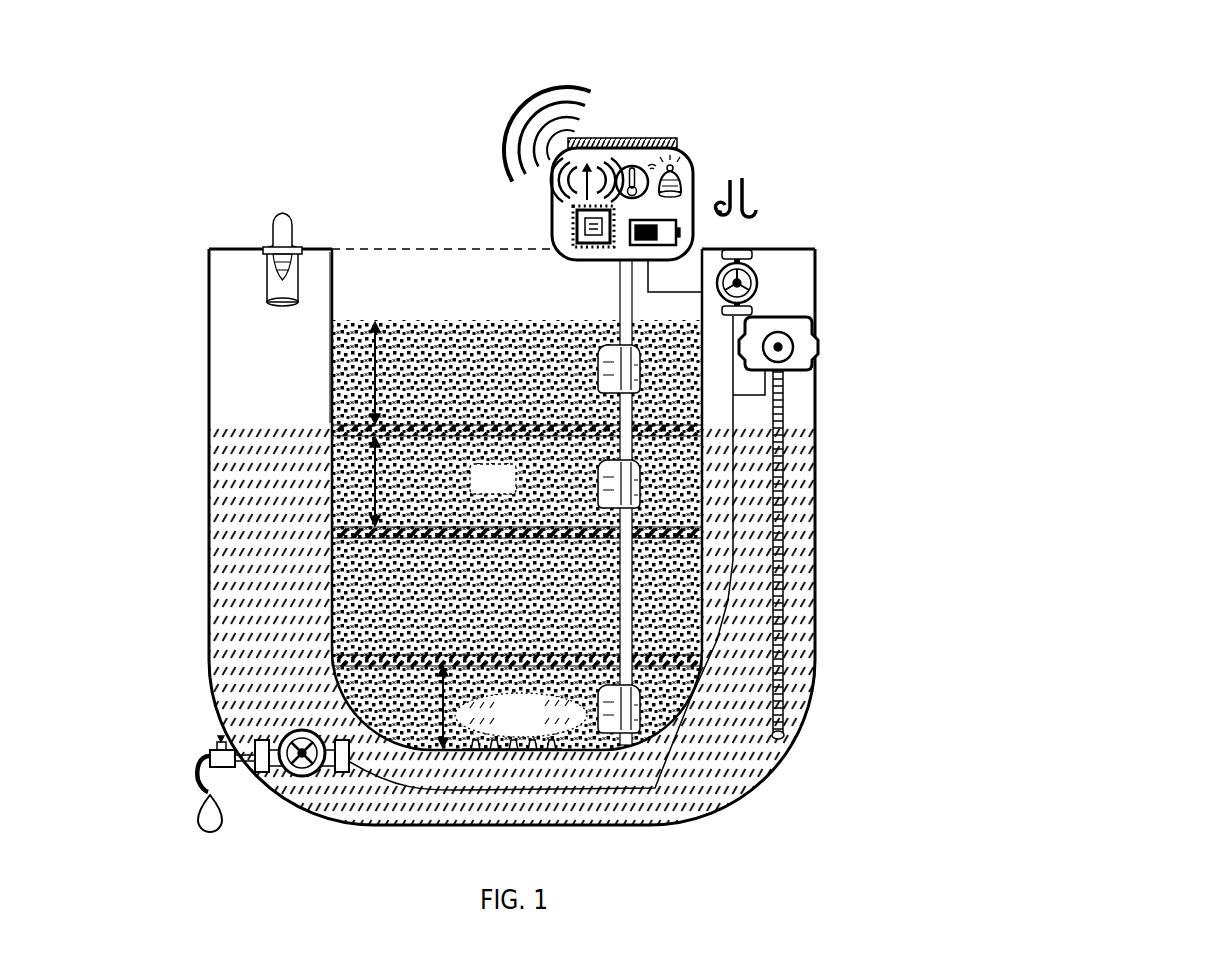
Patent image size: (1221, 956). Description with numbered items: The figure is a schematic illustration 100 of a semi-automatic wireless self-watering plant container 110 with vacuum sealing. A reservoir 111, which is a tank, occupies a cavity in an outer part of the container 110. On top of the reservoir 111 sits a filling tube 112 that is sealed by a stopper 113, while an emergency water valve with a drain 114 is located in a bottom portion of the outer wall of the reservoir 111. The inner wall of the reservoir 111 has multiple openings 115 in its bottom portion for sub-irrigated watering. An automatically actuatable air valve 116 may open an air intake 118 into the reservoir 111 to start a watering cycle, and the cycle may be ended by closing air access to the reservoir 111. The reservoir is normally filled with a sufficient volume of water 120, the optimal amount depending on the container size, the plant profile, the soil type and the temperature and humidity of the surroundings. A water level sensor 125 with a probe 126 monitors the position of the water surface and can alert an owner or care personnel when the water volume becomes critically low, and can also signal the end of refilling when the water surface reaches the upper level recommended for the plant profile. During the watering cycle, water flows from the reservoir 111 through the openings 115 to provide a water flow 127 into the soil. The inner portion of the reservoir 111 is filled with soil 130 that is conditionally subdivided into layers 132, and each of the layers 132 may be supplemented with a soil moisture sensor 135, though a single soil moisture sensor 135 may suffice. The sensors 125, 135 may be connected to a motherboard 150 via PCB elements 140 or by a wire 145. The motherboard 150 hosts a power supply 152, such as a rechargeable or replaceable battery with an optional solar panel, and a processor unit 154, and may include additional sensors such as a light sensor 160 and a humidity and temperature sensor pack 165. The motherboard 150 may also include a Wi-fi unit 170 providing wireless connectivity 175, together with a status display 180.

The schematic illustration 100 is at (1197, 103).
The self-watering plant container 110 is at (209, 342).
The reservoir 111 is at (277, 405).
The filling tube 112 is at (267, 278).
The stopper 113 is at (272, 230).
The emergency water valve with drain 114 is at (212, 756).
The openings 115 is at (497, 752).
The air valve 116 is at (757, 290).
The air intake 118 is at (756, 205).
The water 120 is at (270, 536).
The water level sensor 125 is at (812, 338).
The probe 126 is at (736, 520).
The water flow 127 is at (497, 726).
The soil 130 is at (480, 487).
The layers 132 is at (372, 486).
The soil moisture sensor 135 is at (640, 712).
The PCB elements 140 is at (620, 312).
The wire 145 is at (753, 396).
The motherboard 150 is at (693, 152).
The power supply 152 is at (697, 236).
The processor unit 154 is at (553, 236).
The light sensor 160 is at (694, 170).
The humidity and temperature sensor pack 165 is at (634, 166).
The Wi-fi unit 170 is at (556, 180).
The wireless connectivity 175 is at (504, 150).
The status display 180 is at (590, 140).